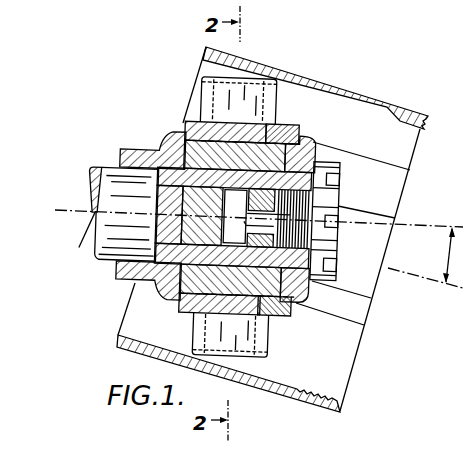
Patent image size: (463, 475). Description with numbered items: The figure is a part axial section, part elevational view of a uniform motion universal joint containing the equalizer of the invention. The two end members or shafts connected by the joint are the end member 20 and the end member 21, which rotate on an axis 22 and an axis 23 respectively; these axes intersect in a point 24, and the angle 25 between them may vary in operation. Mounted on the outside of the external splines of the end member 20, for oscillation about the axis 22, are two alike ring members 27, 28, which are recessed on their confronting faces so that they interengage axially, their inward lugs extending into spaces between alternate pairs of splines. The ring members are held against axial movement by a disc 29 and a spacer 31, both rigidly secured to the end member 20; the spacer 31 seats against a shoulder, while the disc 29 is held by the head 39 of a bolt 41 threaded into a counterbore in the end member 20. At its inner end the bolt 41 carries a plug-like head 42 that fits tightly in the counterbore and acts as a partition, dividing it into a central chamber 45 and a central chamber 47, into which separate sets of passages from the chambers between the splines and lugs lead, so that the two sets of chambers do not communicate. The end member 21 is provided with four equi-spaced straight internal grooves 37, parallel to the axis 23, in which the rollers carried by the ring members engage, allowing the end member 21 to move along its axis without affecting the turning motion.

The end member 20 is at (92, 237).
The end member 21 is at (357, 94).
The axis 22 is at (81, 212).
The axis 23 is at (389, 263).
The point 24 is at (236, 216).
The angle 25 is at (447, 251).
The ring member 27 is at (188, 127).
The ring member 28 is at (277, 130).
The disc 29 is at (312, 143).
The spacer 31 is at (167, 148).
The internal grooves 37 is at (403, 156).
The head of bolt 39 is at (327, 202).
The bolt 41 is at (268, 217).
The plug-like head 42 is at (266, 239).
The central chamber 45 is at (163, 301).
The central chamber 47 is at (244, 221).